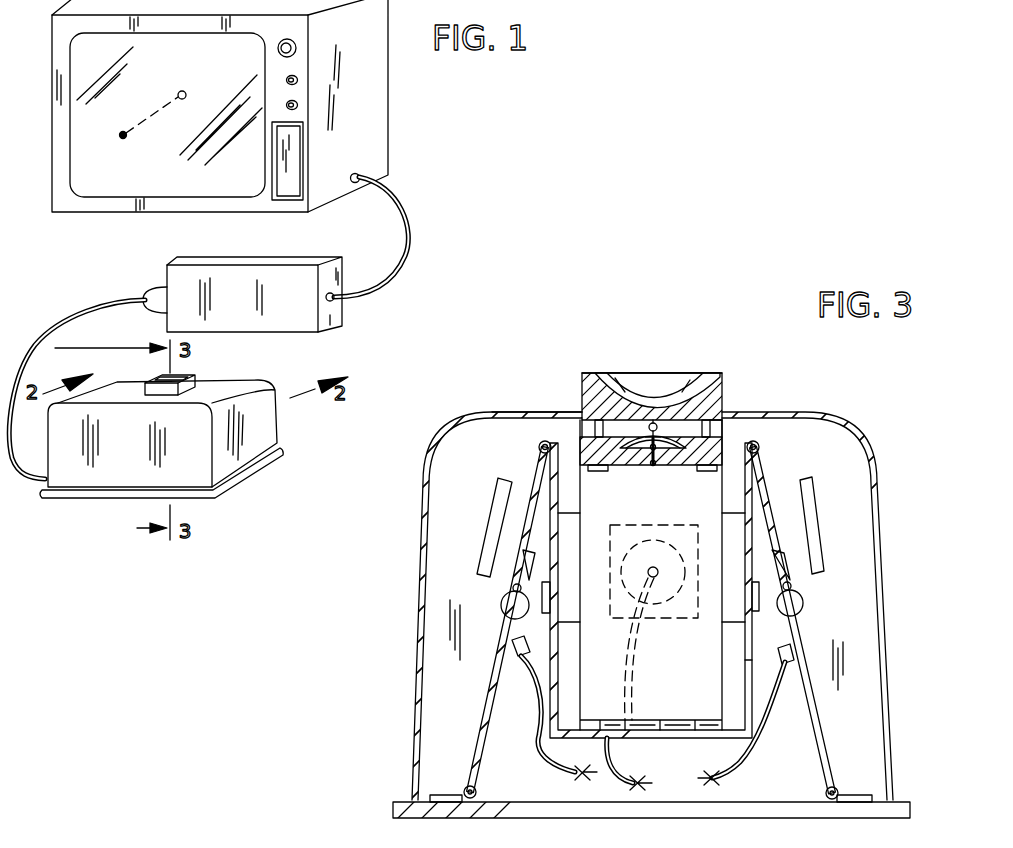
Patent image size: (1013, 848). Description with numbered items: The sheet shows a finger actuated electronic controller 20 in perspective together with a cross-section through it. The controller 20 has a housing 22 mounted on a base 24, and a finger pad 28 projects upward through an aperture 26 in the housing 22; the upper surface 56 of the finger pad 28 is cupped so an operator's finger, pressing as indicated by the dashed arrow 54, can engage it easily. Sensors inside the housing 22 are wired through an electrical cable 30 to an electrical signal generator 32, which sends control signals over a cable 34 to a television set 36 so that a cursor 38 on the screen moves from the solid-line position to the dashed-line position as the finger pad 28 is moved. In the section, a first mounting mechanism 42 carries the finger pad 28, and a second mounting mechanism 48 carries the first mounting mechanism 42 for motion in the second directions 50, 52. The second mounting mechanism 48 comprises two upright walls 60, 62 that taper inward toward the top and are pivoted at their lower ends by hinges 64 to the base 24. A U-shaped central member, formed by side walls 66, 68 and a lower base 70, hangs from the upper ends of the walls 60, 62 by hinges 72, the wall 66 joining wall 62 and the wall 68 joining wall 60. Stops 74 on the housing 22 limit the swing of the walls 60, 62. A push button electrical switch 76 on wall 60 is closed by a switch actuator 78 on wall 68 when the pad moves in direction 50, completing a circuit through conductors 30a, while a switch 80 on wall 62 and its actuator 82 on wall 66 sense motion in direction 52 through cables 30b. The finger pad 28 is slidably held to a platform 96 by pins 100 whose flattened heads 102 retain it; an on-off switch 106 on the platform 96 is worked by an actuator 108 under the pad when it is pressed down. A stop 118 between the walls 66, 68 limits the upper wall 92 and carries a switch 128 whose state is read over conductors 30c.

In FIG. 1, the finger actuated electronic controller 20 is at (232, 503).
In FIG. 1, the housing 22 is at (273, 423).
In FIG. 3, the housing 22 is at (418, 552).
In FIG. 1, the base 24 is at (267, 463).
In FIG. 3, the base 24 is at (688, 820).
In FIG. 1, the aperture 26 is at (195, 391).
In FIG. 3, the aperture 26 is at (530, 418).
In FIG. 1, the finger pad 28 is at (196, 382).
In FIG. 3, the finger pad 28 is at (722, 380).
In FIG. 1, the electrical cable 30 is at (72, 320).
In FIG. 3, the conductors 30a is at (762, 752).
In FIG. 3, the cables 30b is at (537, 762).
In FIG. 3, the conductors 30c is at (623, 765).
In FIG. 1, the electrical signal generator 32 is at (330, 325).
In FIG. 1, the cable 34 is at (408, 240).
In FIG. 1, the television set 36 is at (380, 117).
In FIG. 1, the cursor 38 is at (186, 92).
In FIG. 3, the first mounting mechanism 42 is at (735, 499).
In FIG. 3, the second mounting mechanism 48 is at (795, 510).
In FIG. 3, the second direction arrow 50 is at (772, 390).
In FIG. 3, the second direction arrow 52 is at (535, 390).
In FIG. 3, the dashed arrow 54 is at (489, 836).
In FIG. 3, the upper surface 56 is at (597, 390).
In FIG. 3, the wall 60 is at (820, 717).
In FIG. 3, the wall 62 is at (488, 702).
In FIG. 3, the hinge 64 is at (476, 789).
In FIG. 3, the first vertical side wall 66 is at (560, 692).
In FIG. 3, the second vertical side wall 68 is at (747, 683).
In FIG. 3, the lower base 70 is at (653, 722).
In FIG. 3, the hinge 72 is at (538, 449).
In FIG. 3, the stop 74 is at (485, 530).
In FIG. 3, the push button electrical switch 76 is at (805, 607).
In FIG. 3, the switch actuator 78 is at (752, 610).
In FIG. 3, the switch 80 is at (505, 600).
In FIG. 3, the actuator 82 is at (549, 598).
In FIG. 3, the upper wall 92 is at (661, 519).
In FIG. 3, the platform 96 is at (631, 466).
In FIG. 3, the pin 100 is at (593, 429).
In FIG. 3, the head 102 is at (600, 471).
In FIG. 3, the electrical on-off switch 106 is at (672, 437).
In FIG. 3, the switch actuator 108 is at (653, 422).
In FIG. 3, the stop 118 is at (735, 598).
In FIG. 3, the switch 128 is at (624, 552).